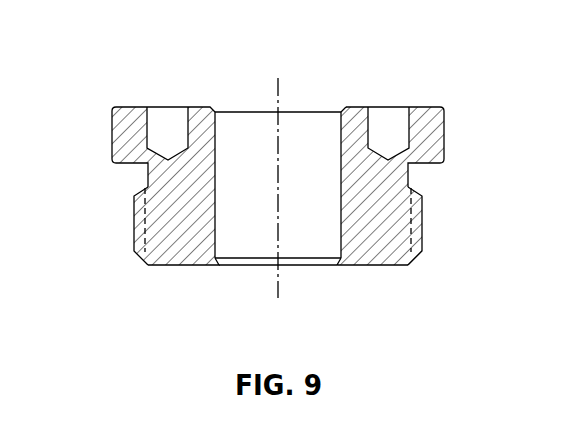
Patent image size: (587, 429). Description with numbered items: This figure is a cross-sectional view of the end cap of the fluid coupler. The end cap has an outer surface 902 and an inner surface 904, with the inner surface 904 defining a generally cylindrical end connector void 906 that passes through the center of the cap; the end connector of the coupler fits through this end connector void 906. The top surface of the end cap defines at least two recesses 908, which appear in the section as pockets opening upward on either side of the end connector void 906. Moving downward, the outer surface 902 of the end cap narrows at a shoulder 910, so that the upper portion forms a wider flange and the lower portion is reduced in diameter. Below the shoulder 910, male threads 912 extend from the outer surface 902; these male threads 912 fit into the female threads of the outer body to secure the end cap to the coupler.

The outer surface 902 is at (418, 106).
The inner surface 904 is at (215, 210).
The end connector void 906 is at (297, 235).
The recesses 908 is at (385, 110).
The shoulder 910 is at (428, 145).
The male threads 912 is at (134, 222).